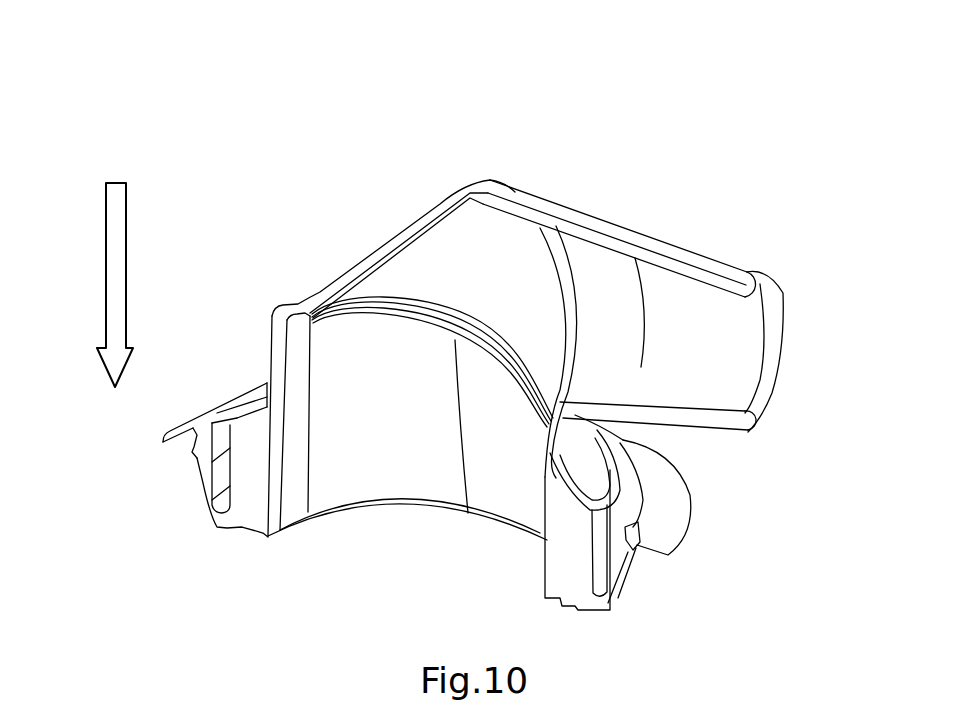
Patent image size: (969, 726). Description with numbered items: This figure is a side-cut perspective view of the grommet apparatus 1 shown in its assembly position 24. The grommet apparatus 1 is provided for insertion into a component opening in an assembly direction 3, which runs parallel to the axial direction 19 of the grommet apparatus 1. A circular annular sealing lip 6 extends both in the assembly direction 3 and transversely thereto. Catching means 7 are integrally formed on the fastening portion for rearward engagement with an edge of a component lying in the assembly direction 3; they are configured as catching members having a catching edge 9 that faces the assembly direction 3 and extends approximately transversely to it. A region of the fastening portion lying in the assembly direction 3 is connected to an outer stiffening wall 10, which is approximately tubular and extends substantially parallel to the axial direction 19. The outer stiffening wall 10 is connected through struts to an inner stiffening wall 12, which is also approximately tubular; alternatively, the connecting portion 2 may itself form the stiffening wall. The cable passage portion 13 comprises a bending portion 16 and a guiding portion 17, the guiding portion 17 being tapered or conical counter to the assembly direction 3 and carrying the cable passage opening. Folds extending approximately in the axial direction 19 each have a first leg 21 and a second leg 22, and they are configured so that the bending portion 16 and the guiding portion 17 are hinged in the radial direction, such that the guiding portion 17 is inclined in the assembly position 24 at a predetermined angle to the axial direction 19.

The grommet apparatus 1 is at (143, 96).
The connecting portion 2 is at (156, 461).
The assembly direction 3 is at (105, 213).
The sealing lip 6 is at (670, 500).
The catching means 7 is at (186, 466).
The catching edge 9 is at (637, 545).
The outer stiffening wall 10 is at (225, 523).
The inner stiffening wall 12 is at (260, 532).
The cable passage portion 13 is at (561, 151).
The bending portion 16 is at (390, 243).
The guiding portion 17 is at (707, 262).
The axial direction 19 is at (105, 303).
The first leg 21 is at (427, 213).
The second leg 22 is at (343, 275).
The assembly position 24 is at (525, 113).